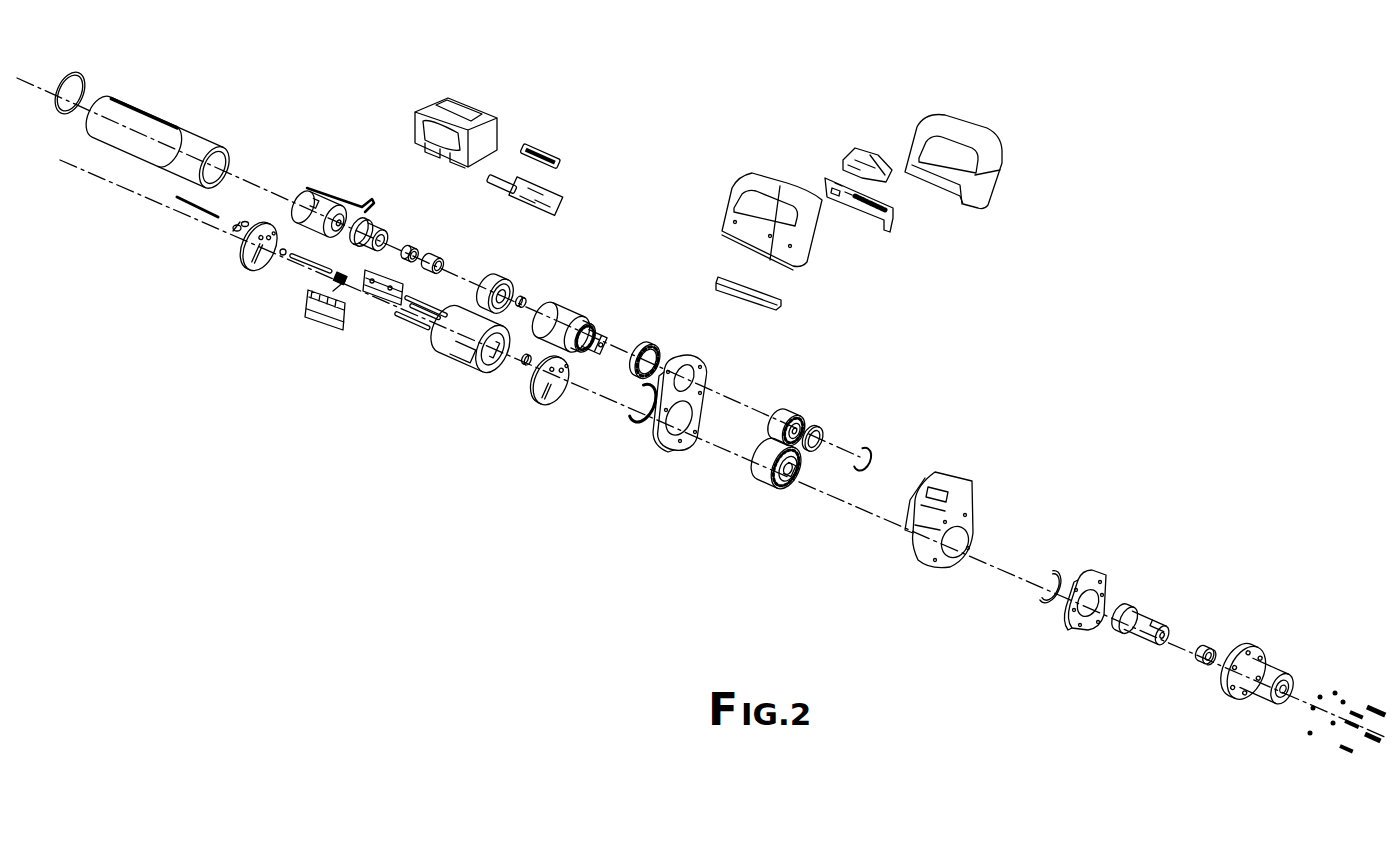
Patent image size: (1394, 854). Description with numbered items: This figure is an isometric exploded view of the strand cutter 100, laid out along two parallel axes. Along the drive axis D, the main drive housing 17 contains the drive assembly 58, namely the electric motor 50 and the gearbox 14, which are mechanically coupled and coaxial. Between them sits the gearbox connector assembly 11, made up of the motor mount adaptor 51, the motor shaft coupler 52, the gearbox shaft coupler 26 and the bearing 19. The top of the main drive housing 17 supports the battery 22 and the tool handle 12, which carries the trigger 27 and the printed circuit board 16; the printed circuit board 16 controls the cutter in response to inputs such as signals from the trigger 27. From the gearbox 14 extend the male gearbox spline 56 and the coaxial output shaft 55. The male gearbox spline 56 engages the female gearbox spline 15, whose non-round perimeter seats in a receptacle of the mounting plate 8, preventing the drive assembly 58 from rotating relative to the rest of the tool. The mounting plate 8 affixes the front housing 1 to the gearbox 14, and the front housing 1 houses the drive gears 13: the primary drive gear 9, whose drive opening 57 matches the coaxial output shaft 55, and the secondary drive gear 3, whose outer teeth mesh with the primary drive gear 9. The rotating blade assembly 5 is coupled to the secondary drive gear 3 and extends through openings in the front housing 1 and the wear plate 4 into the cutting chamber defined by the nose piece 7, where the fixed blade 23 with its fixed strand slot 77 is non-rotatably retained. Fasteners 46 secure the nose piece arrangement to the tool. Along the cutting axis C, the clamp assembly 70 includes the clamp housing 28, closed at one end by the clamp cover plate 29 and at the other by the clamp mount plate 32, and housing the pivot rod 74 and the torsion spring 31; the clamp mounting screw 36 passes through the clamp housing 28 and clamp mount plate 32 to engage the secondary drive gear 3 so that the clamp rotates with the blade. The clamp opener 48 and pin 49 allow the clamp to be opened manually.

The front housing 1 is at (973, 489).
The secondary drive gear 3 is at (767, 487).
The wear plate 4 is at (1095, 572).
The rotating blade assembly 5 is at (1153, 620).
The nose piece 7 is at (1270, 663).
The mounting plate 8 is at (657, 427).
The primary drive gear 9 is at (790, 407).
The gearbox connector assembly 11 is at (495, 273).
The tool handle 12 is at (820, 213).
The drive gears 13 is at (773, 382).
The gearbox 14 is at (558, 312).
The female gearbox spline 15 is at (653, 348).
The printed circuit board 16 is at (832, 178).
The main drive housing 17 is at (195, 137).
The bearing 19 is at (522, 297).
The battery 22 is at (423, 107).
The fixed blade 23 is at (1208, 647).
The gearbox shaft coupler 26 is at (437, 262).
The trigger 27 is at (887, 174).
The clamp housing 28 is at (495, 375).
The clamp cover plate 29 is at (243, 267).
The torsion spring 31 is at (344, 283).
The clamp mount plate 32 is at (533, 387).
The clamp mounting screw 36 is at (428, 325).
The fasteners 46 is at (1340, 748).
The clamp opener 48 is at (233, 227).
The pin 49 is at (178, 197).
The electric motor 50 is at (327, 197).
The motor mount adaptor 51 is at (385, 237).
The motor shaft coupler 52 is at (412, 250).
The coaxial output shaft 55 is at (603, 332).
The male gearbox spline 56 is at (588, 324).
The drive opening 57 is at (808, 432).
The drive assembly 58 is at (550, 231).
The clamp assembly 70 is at (347, 374).
The pivot rod 74 is at (300, 263).
The fixed strand slot 77 is at (1212, 663).
The strand cutter 100 is at (366, 523).
The cutting axis C is at (1177, 643).
The drive axis D is at (617, 348).